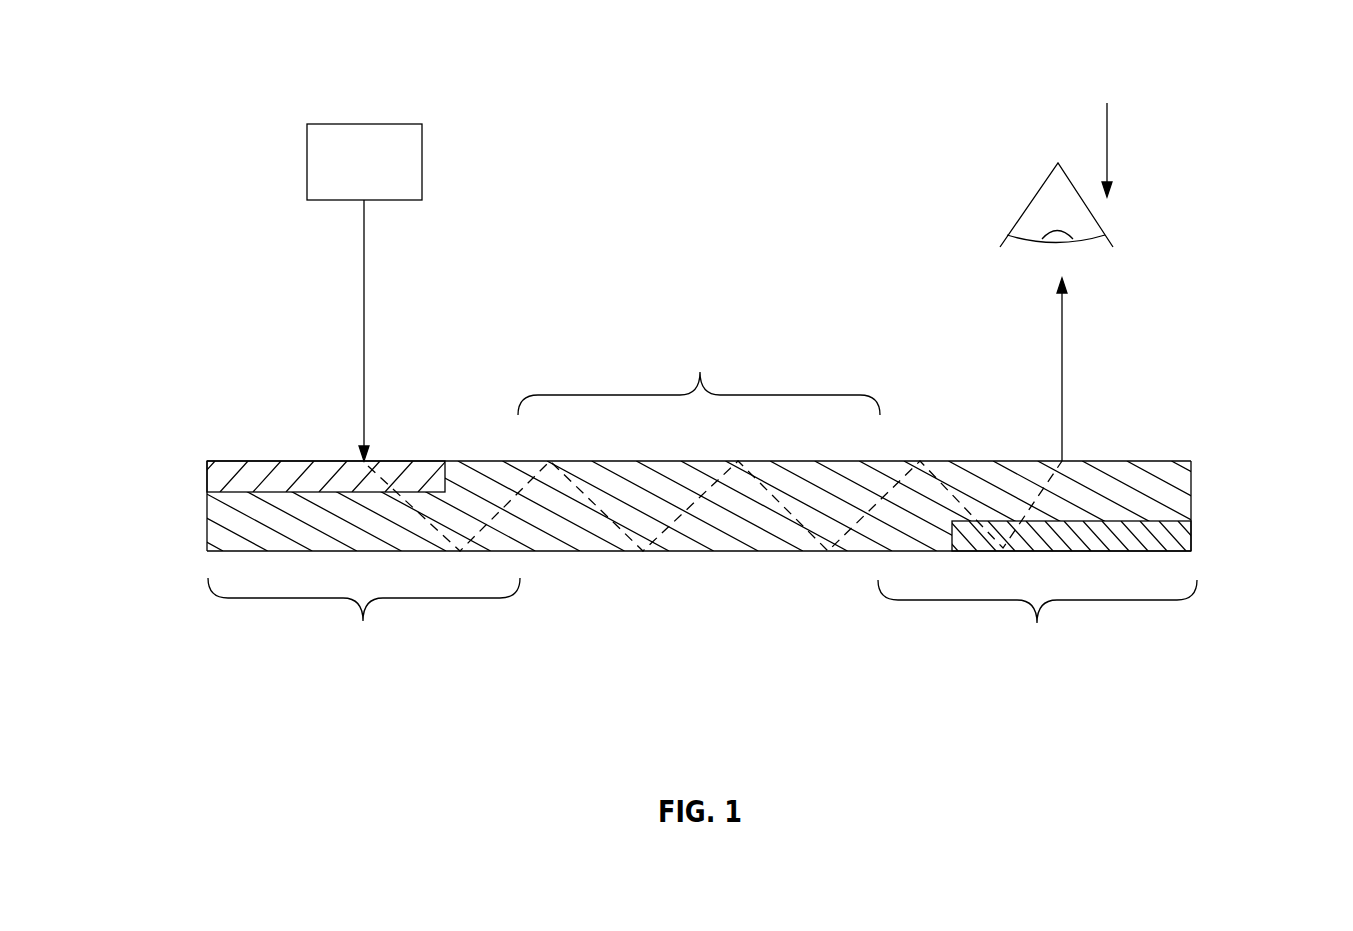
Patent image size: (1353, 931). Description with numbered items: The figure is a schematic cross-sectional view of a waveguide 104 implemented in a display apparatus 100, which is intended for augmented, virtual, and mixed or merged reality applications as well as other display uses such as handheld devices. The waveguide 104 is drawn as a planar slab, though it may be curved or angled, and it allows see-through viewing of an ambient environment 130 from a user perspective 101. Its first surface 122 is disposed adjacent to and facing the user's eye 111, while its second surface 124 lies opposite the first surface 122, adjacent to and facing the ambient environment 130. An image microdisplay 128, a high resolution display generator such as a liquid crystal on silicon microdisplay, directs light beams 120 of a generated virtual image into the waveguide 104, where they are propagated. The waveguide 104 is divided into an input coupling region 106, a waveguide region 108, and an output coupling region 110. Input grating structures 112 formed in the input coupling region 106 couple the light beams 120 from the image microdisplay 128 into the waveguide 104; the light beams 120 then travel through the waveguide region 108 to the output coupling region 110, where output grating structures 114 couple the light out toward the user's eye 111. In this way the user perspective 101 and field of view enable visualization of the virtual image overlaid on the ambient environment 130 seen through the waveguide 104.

The display apparatus 100 is at (238, 88).
The user perspective 101 is at (1108, 152).
The waveguide 104 is at (1192, 495).
The input coupling region 106 is at (364, 624).
The waveguide region 108 is at (699, 375).
The output coupling region 110 is at (1037, 624).
The user's eye 111 is at (1027, 210).
The input grating structures 112 is at (207, 466).
The output grating structures 114 is at (1192, 533).
The light beams 120 is at (366, 345).
The first surface 122 is at (748, 461).
The second surface 124 is at (698, 553).
The image microdisplay 128 is at (382, 175).
The ambient environment 130 is at (722, 682).